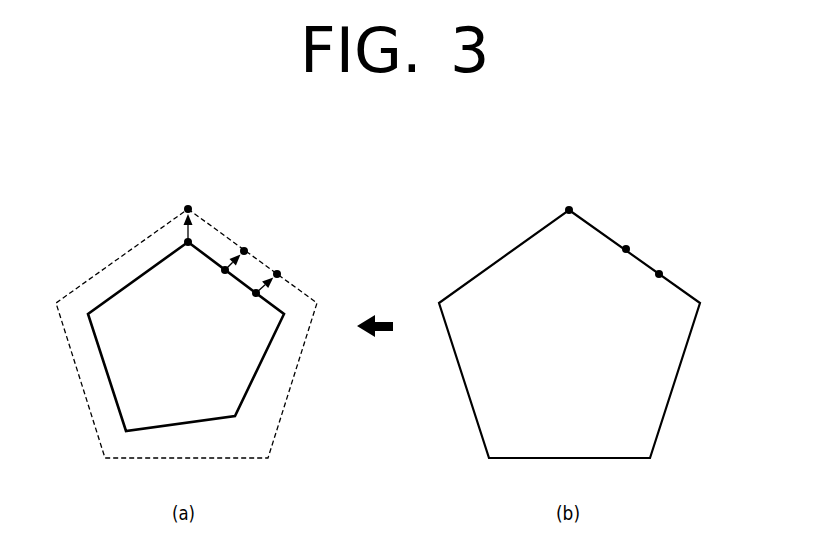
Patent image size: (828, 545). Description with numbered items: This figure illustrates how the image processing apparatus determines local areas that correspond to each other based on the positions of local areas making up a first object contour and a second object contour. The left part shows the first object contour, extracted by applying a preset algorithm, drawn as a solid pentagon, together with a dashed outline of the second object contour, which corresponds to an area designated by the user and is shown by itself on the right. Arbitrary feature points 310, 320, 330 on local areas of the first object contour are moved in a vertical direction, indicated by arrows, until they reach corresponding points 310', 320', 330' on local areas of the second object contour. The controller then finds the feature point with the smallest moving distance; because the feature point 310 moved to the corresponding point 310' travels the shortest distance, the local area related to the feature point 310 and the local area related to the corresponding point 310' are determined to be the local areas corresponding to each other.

The feature point 310 is at (227, 193).
The corresponding point 310' is at (395, 181).
The feature point 320 is at (289, 226).
The corresponding point 320' is at (463, 221).
The feature point 330 is at (322, 260).
The corresponding point 330' is at (494, 250).